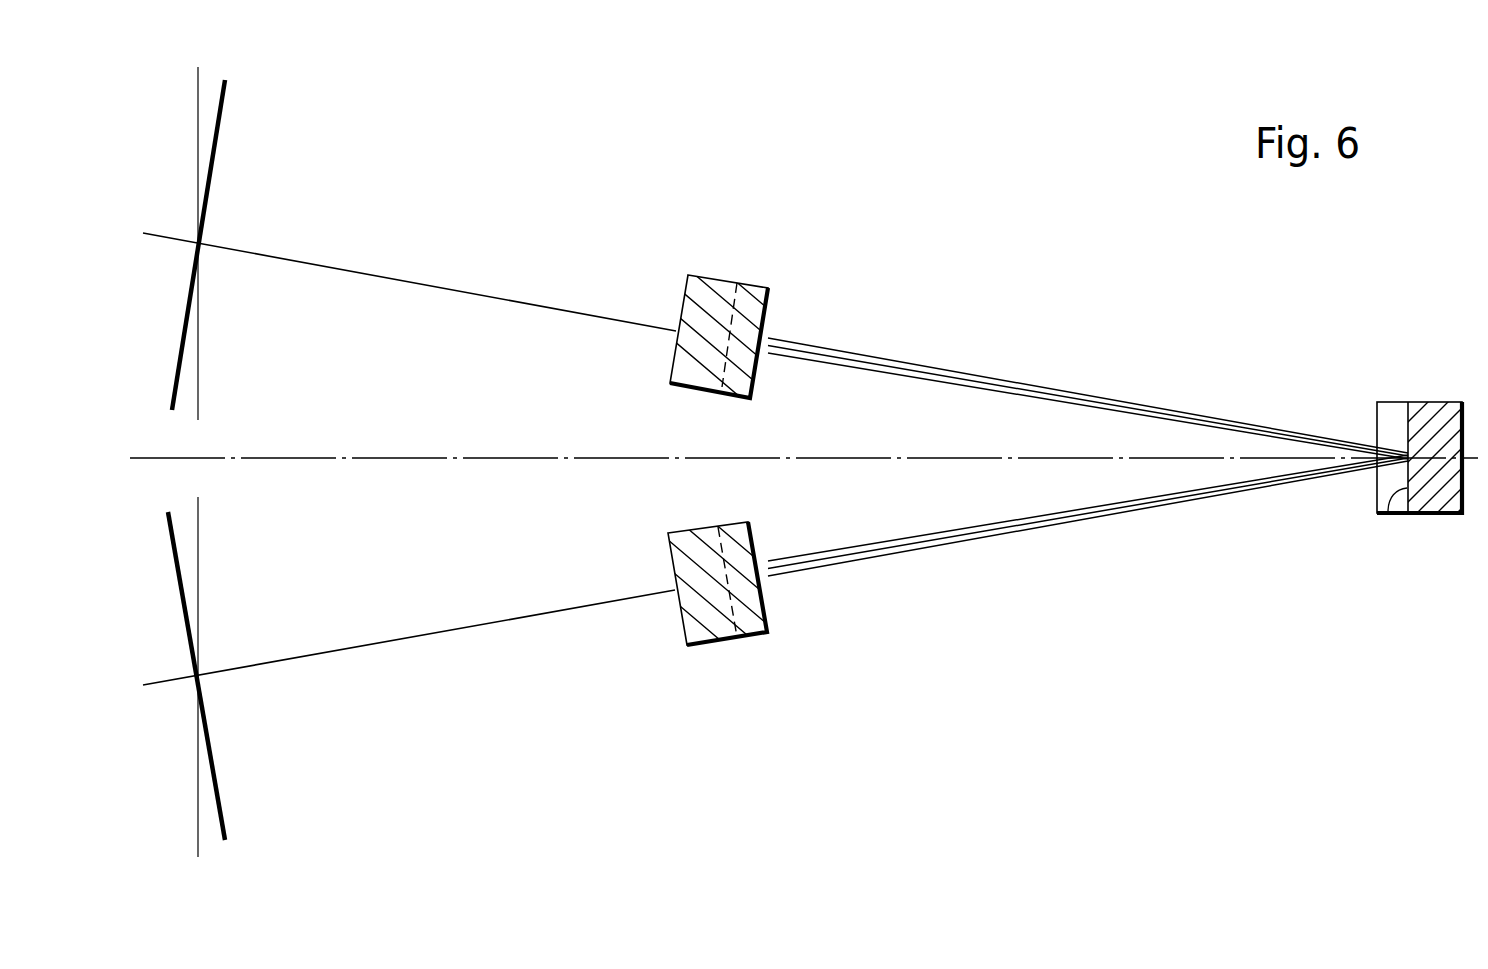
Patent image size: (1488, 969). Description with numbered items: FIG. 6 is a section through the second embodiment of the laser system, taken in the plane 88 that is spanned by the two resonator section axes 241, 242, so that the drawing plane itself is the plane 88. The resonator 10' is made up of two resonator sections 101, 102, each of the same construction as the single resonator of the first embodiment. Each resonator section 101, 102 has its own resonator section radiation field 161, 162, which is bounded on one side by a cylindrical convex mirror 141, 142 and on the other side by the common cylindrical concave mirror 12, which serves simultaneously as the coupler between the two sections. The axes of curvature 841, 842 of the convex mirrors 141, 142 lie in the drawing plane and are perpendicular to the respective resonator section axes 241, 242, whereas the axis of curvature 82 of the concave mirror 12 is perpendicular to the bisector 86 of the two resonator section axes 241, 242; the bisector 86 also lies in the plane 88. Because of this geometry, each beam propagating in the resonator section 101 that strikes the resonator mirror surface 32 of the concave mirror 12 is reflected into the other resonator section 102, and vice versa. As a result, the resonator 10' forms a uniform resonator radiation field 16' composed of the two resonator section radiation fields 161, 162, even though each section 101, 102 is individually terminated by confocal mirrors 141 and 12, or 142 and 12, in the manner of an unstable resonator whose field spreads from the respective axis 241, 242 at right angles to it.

The axis of curvature 841 is at (215, 147).
The axis of curvature 842 is at (218, 790).
The axis of curvature 82 is at (198, 402).
The bisector 86 is at (420, 457).
The resonator section axis 241 is at (435, 287).
The resonator section axis 242 is at (435, 636).
The convex mirror 141 is at (702, 283).
The convex mirror 142 is at (703, 615).
The resonator section radiation field 161 is at (890, 358).
The resonator section radiation field 162 is at (900, 558).
The resonator section 101 is at (996, 360).
The resonator section 102 is at (1008, 548).
The uniform resonator radiation field 16' is at (1157, 355).
The resonator 10' is at (1283, 350).
The concave mirror 12 is at (1420, 407).
The resonator mirror surface 32 is at (1390, 514).
The plane 88 is at (587, 812).